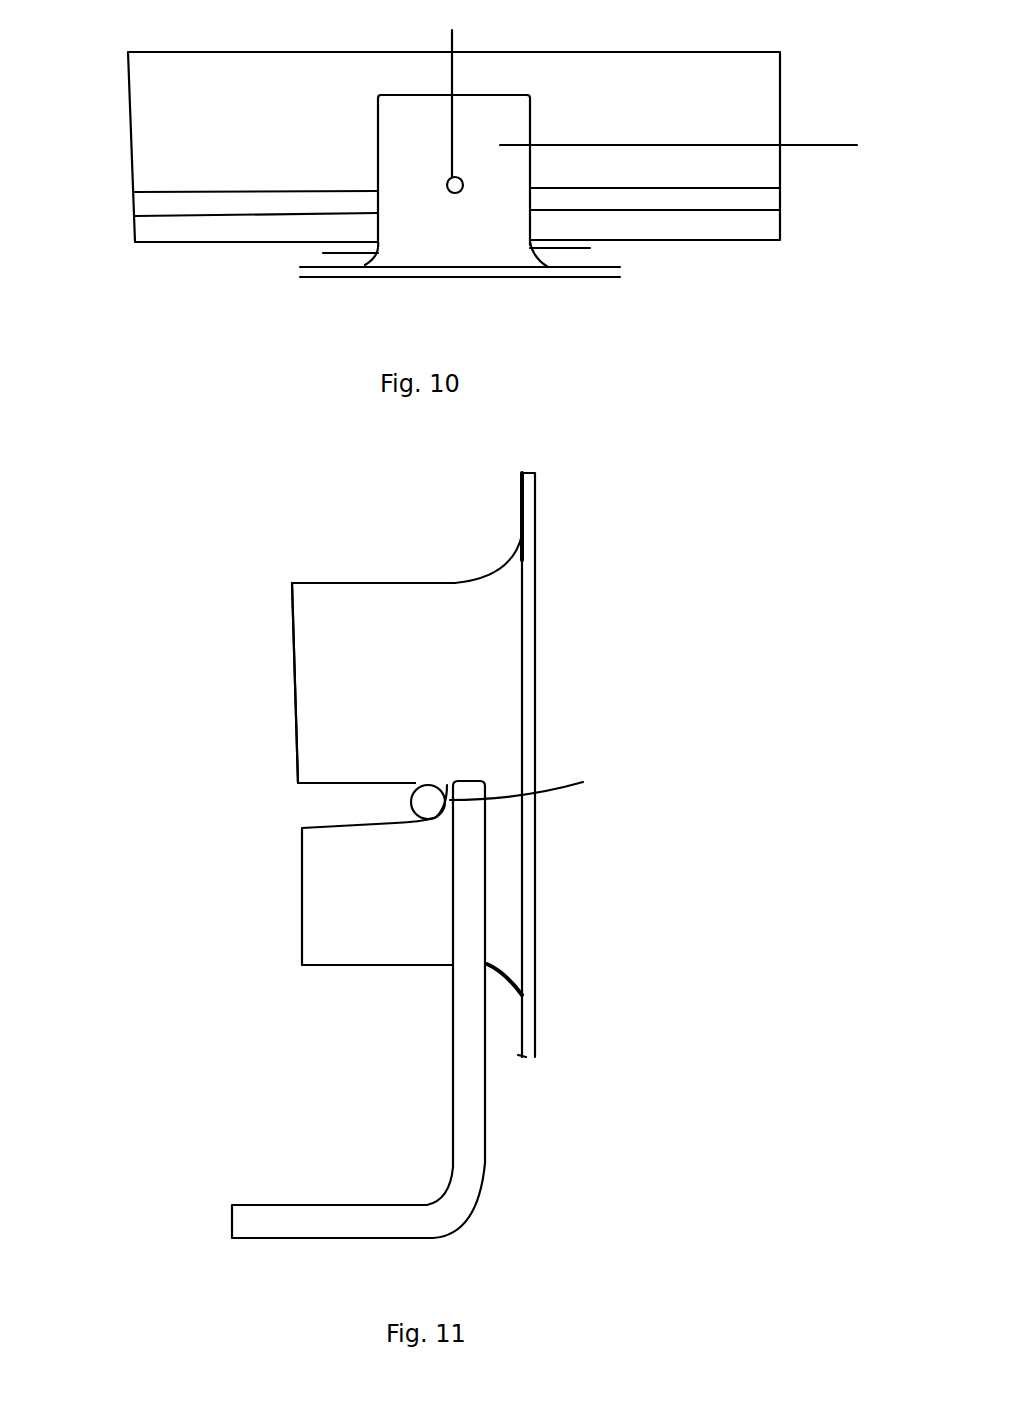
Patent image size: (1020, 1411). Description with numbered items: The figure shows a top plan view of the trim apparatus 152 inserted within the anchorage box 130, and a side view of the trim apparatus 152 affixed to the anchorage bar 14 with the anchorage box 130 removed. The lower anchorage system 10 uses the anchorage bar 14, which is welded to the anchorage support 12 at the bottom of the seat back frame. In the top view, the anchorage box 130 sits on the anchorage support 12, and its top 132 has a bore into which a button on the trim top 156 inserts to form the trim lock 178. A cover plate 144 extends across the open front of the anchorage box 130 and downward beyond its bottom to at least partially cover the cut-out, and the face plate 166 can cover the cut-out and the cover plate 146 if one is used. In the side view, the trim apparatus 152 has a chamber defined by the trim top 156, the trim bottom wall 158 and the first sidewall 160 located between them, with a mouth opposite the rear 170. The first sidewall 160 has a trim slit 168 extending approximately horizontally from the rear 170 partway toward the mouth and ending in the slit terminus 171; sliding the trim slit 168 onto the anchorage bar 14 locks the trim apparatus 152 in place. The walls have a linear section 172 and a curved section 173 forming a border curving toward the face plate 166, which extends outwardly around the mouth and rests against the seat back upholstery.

In FIG. 10, the lower anchorage system 10 is at (737, 112).
In FIG. 10, the anchorage support 12 is at (155, 156).
In FIG. 11, the anchorage support 12 is at (468, 1192).
In FIG. 10, the anchorage bar 14 is at (758, 200).
In FIG. 11, the anchorage bar 14 is at (532, 792).
In FIG. 10, the anchorage box 130 is at (425, 115).
In FIG. 10, the top 132 is at (703, 142).
In FIG. 10, the cover plate 144 is at (584, 245).
In FIG. 10, the cover plate 146 is at (318, 277).
In FIG. 10, the trim apparatus 152 is at (572, 278).
In FIG. 11, the trim apparatus 152 is at (326, 642).
In FIG. 11, the trim top 156 is at (360, 581).
In FIG. 11, the trim bottom wall 158 is at (380, 967).
In FIG. 11, the first sidewall 160 is at (438, 648).
In FIG. 11, the face plate 166 is at (537, 527).
In FIG. 11, the trim slit 168 is at (342, 823).
In FIG. 11, the rear 170 is at (300, 780).
In FIG. 11, the slit terminus 171 is at (445, 790).
In FIG. 11, the linear section 172 is at (414, 967).
In FIG. 11, the curved section 173 is at (520, 978).
In FIG. 10, the trim lock 178 is at (455, 98).